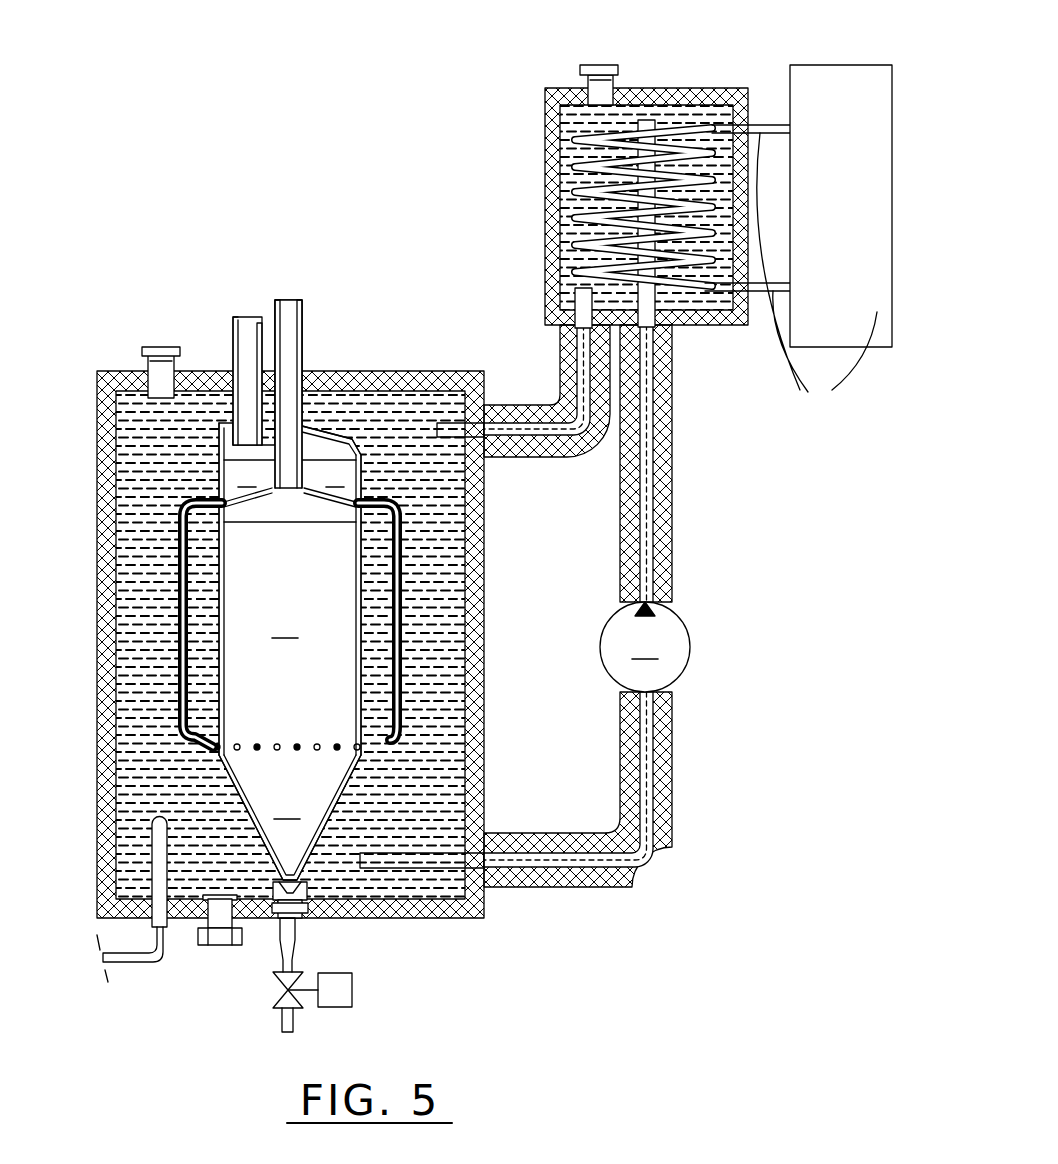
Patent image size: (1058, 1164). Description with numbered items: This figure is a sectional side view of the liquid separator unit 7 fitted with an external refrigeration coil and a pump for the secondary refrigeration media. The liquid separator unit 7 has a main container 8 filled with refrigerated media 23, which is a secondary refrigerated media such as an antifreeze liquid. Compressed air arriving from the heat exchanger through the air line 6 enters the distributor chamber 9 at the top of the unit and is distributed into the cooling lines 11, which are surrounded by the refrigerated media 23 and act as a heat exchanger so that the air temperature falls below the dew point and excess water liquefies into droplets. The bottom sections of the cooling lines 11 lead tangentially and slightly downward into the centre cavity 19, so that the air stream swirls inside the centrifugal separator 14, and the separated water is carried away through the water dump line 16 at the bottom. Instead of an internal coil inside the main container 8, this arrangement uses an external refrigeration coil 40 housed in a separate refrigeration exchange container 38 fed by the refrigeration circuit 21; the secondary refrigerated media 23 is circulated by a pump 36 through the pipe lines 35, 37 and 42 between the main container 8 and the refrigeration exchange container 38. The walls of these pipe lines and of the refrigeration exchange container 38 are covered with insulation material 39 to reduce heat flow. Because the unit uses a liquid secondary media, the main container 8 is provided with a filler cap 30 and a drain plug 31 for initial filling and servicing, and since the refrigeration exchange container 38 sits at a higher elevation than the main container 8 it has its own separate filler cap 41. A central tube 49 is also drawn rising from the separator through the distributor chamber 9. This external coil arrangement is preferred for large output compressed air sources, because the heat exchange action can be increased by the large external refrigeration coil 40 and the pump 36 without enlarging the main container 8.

The air line 6 is at (252, 320).
The liquid separator unit 7 is at (100, 504).
The main container 8 is at (113, 418).
The distributor chamber 9 is at (291, 475).
The cooling lines 11 is at (180, 628).
The centrifugal separator 14 is at (287, 812).
The water dump line 16 is at (290, 933).
The centre cavity 19 is at (290, 590).
The refrigeration circuit 21 is at (824, 237).
The refrigerated media 23 is at (577, 137).
The filler cap 30 is at (158, 351).
The drain plug 31 is at (218, 945).
The pipe line 35 is at (548, 862).
The pump 36 is at (645, 647).
The pipe line 37 is at (653, 513).
The refrigeration exchange container 38 is at (653, 88).
The insulation material 39 is at (547, 210).
The external refrigeration coil 40 is at (673, 133).
The filler cap 41 is at (605, 72).
The pipe line 42 is at (562, 374).
The central tube 49 is at (290, 313).